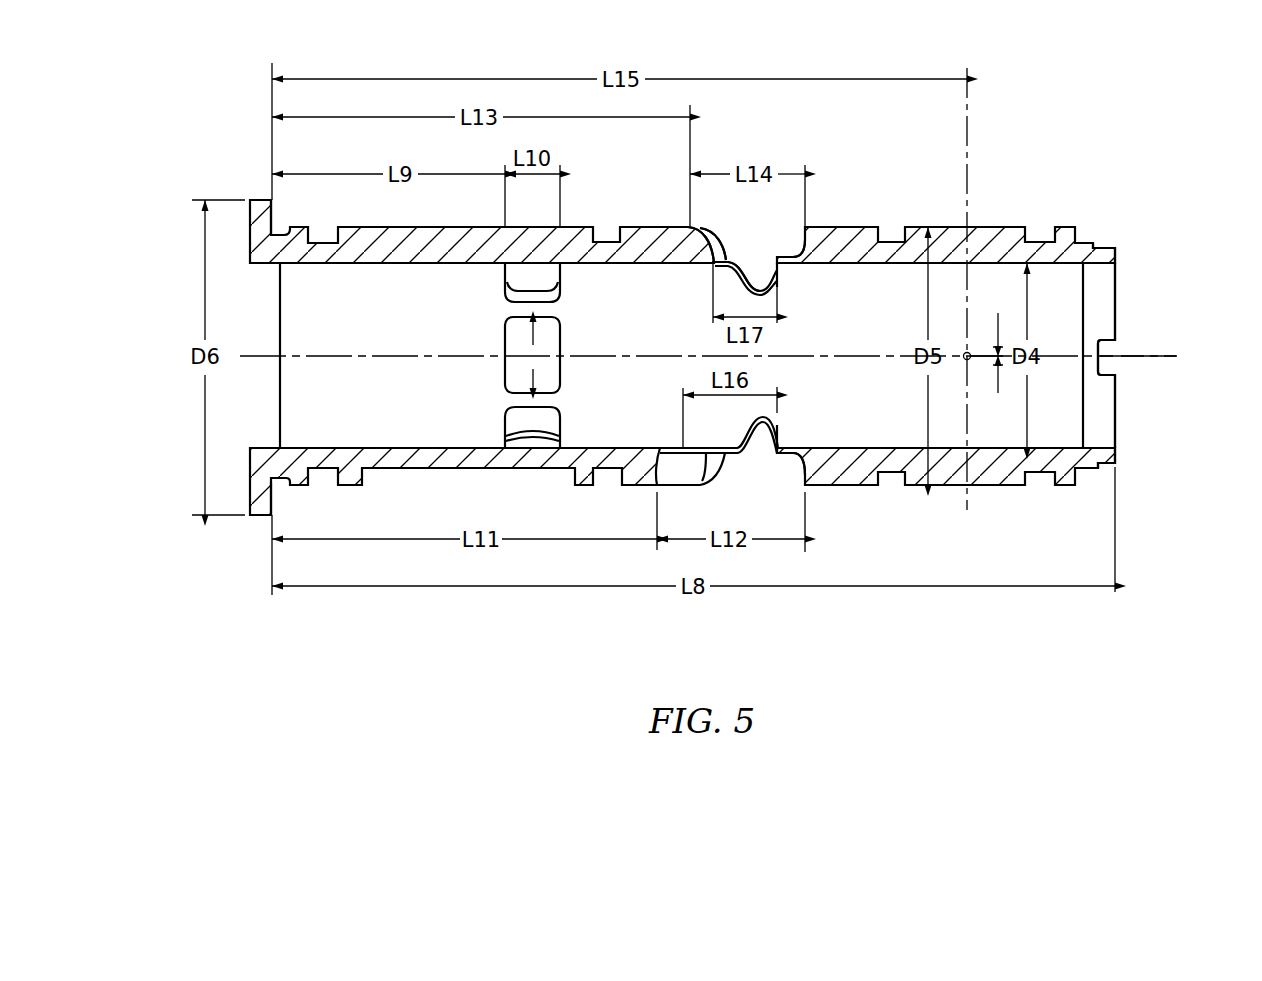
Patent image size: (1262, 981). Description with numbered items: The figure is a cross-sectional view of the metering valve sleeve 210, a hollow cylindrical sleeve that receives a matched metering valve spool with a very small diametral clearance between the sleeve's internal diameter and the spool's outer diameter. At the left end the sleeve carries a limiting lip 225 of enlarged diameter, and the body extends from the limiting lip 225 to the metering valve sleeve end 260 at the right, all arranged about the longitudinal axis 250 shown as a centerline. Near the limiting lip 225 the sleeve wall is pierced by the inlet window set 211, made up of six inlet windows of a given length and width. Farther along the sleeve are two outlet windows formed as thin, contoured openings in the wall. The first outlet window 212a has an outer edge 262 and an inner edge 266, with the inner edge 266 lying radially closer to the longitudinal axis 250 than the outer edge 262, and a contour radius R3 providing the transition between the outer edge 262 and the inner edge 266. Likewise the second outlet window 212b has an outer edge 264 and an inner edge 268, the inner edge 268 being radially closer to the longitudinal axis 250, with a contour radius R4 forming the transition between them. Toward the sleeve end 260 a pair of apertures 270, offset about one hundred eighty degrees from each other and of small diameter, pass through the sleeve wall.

The metering valve sleeve 210 is at (1082, 122).
The inlet window set 211 is at (561, 345).
The first outlet window 212a is at (780, 447).
The second outlet window 212b is at (780, 274).
The limiting lip 225 is at (259, 200).
The longitudinal axis 250 is at (1153, 356).
The metering valve sleeve end 260 is at (1115, 466).
The outer edge 262 is at (657, 484).
The outer edge 264 is at (665, 228).
The inner edge 266 is at (683, 447).
The inner edge 268 is at (709, 274).
The apertures 270 is at (966, 360).
The contour radius R3 is at (795, 461).
The contour radius R4 is at (796, 248).